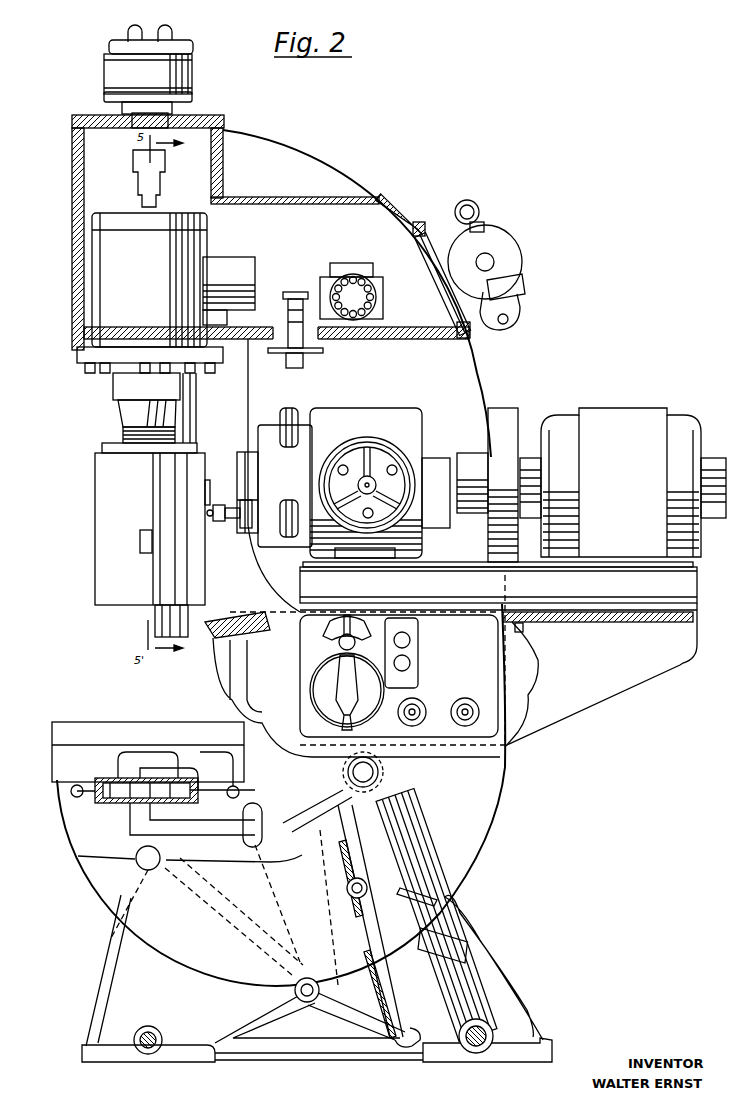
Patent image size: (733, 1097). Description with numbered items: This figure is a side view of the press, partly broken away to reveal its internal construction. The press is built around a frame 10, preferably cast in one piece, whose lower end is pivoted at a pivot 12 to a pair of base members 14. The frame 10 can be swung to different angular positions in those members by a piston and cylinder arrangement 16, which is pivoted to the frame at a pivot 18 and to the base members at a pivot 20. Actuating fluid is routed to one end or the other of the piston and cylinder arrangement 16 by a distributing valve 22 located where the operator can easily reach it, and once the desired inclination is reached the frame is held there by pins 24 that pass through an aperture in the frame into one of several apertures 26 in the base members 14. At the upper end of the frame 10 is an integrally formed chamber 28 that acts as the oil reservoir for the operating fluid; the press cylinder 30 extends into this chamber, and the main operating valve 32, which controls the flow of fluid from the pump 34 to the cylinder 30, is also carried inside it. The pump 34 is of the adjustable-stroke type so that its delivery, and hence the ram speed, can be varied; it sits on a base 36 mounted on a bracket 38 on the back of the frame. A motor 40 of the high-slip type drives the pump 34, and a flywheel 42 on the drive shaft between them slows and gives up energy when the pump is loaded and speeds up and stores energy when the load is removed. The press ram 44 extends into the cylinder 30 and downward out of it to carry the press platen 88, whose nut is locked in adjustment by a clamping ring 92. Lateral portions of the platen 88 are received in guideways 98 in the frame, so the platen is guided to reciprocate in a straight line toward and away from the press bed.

The frame 10 is at (486, 822).
The pivot 12 is at (149, 870).
The base members 14 is at (160, 996).
The piston and cylinder arrangement 16 is at (407, 873).
The pivot 18 is at (370, 774).
The pivot 20 is at (473, 1054).
The distributing valve 22 is at (103, 808).
The pins 24 is at (346, 893).
The apertures 26 is at (311, 1003).
The chamber 28 is at (326, 244).
The press cylinder 30 is at (154, 257).
The main operating valve 32 is at (351, 291).
The pump 34 is at (380, 428).
The base 36 is at (680, 586).
The bracket 38 is at (652, 658).
The motor 40 is at (626, 444).
The flywheel 42 is at (501, 420).
The press ram 44 is at (164, 396).
The press platen 88 is at (100, 505).
The clamping ring 92 is at (102, 448).
The guideways 98 is at (178, 622).